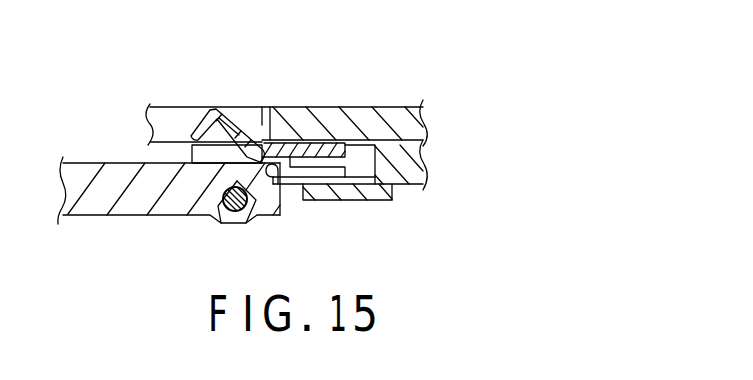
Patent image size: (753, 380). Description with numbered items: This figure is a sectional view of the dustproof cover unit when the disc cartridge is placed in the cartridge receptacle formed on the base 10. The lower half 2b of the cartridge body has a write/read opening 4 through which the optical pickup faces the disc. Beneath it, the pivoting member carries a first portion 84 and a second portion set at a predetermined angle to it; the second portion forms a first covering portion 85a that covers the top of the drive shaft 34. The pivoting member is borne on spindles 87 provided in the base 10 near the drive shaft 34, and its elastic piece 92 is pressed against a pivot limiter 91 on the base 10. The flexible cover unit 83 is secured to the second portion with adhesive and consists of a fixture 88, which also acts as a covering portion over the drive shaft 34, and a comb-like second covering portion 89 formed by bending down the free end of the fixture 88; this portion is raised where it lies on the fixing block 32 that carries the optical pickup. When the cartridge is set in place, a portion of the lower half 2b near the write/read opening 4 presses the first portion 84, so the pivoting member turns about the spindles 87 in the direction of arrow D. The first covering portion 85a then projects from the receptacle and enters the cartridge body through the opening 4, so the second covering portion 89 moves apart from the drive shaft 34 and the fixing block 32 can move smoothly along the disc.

The lower half 2b is at (404, 122).
The second covering portion 89 is at (170, 108).
The write/read opening 4 is at (271, 127).
The direction of arrow D is at (250, 80).
The cover unit 83 is at (198, 130).
The fixture 88 is at (228, 106).
The first covering portion 85a is at (242, 114).
The first portion 84 is at (332, 152).
The elastic piece 92 is at (318, 177).
The base 10 is at (410, 170).
The pivot limiter 91 is at (332, 197).
The fixing block 32 is at (97, 200).
The drive shaft 34 is at (235, 214).
The spindle 87 is at (279, 173).